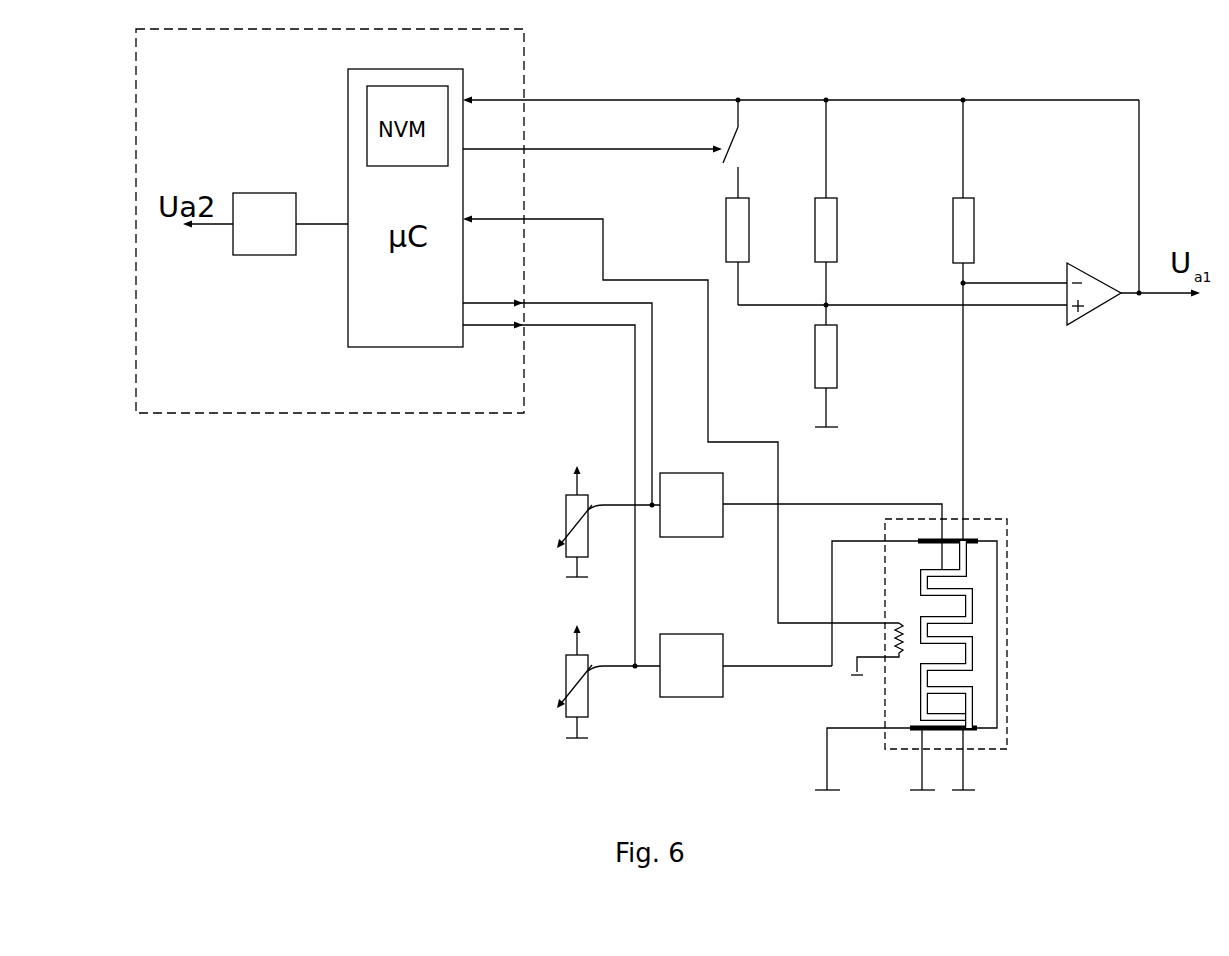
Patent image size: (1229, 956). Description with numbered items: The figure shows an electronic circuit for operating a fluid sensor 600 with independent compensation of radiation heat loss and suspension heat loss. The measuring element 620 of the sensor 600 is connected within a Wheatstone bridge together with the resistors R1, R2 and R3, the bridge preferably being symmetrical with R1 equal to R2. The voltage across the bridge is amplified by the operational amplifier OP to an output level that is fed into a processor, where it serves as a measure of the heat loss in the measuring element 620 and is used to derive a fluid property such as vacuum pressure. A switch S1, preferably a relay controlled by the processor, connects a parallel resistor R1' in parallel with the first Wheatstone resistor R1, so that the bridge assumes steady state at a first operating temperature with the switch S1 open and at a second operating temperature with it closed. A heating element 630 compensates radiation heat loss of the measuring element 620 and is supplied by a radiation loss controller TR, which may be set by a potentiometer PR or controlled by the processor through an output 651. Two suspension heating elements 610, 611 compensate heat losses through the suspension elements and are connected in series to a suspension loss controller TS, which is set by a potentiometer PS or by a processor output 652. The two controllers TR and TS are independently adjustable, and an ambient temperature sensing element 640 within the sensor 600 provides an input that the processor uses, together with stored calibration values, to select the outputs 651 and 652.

The sensor 600 is at (1007, 575).
The suspension heating element 610 is at (970, 539).
The suspension heating element 611 is at (973, 730).
The measuring element 620 is at (975, 604).
The heating element 630 is at (918, 577).
The ambient temperature sensing element 640 is at (890, 636).
The output 651 is at (559, 395).
The output 652 is at (550, 495).
The switch S1 is at (623, 149).
The parallel resistor R1' is at (706, 251).
The first Wheatstone resistor R1 is at (802, 212).
The Wheatstone resistor R2 is at (802, 376).
The Wheatstone resistor R3 is at (938, 320).
The operational amplifier OP is at (1133, 275).
The potentiometer PR is at (583, 521).
The potentiometer PS is at (583, 681).
The radiation loss controller TR is at (801, 523).
The suspension loss controller TS is at (746, 665).